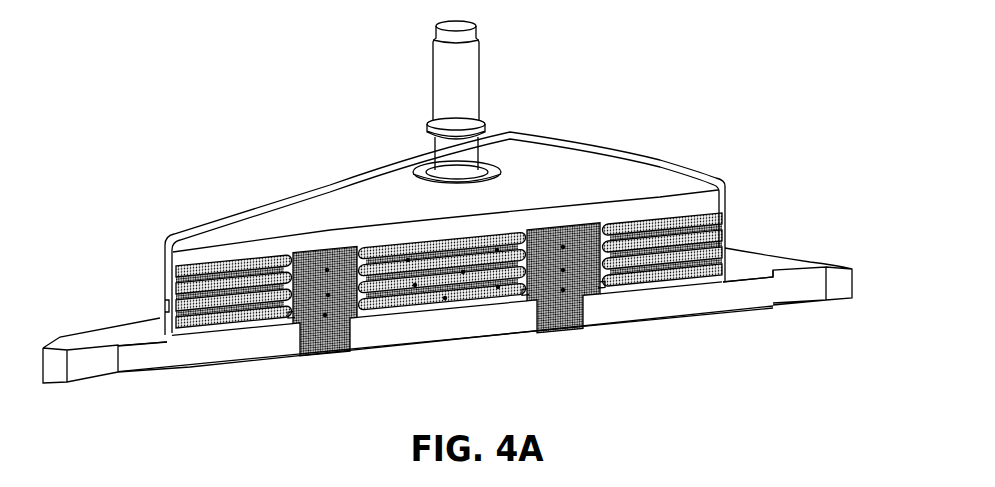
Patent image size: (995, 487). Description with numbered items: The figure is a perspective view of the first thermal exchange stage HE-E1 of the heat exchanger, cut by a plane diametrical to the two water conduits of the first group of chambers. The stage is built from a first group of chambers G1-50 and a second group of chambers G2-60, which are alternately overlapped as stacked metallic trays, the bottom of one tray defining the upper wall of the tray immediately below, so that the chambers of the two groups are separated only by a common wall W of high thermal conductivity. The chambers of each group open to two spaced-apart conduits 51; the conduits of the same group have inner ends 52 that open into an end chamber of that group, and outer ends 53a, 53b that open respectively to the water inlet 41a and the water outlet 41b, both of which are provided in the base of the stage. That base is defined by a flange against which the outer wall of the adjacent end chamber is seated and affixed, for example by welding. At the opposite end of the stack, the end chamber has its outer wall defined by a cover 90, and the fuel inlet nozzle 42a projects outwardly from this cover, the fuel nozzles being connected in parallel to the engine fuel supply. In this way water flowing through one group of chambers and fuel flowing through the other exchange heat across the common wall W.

The first stage of thermal exchange of the heat exchanger HE-E1 is at (328, 152).
The cover 90 is at (584, 165).
The fuel inlet nozzle 42a is at (430, 62).
The first group of chambers G1-50 is at (449, 262).
The second group of chambers G2-60 is at (449, 279).
The outer end of conduit 53a is at (322, 301).
The outer end of conduit 53b is at (563, 278).
The water inlet 41a is at (325, 337).
The water outlet 41b is at (560, 313).
The common wall W is at (497, 248).
The inner end of conduit 52 is at (303, 257).
The conduit 51 is at (330, 265).